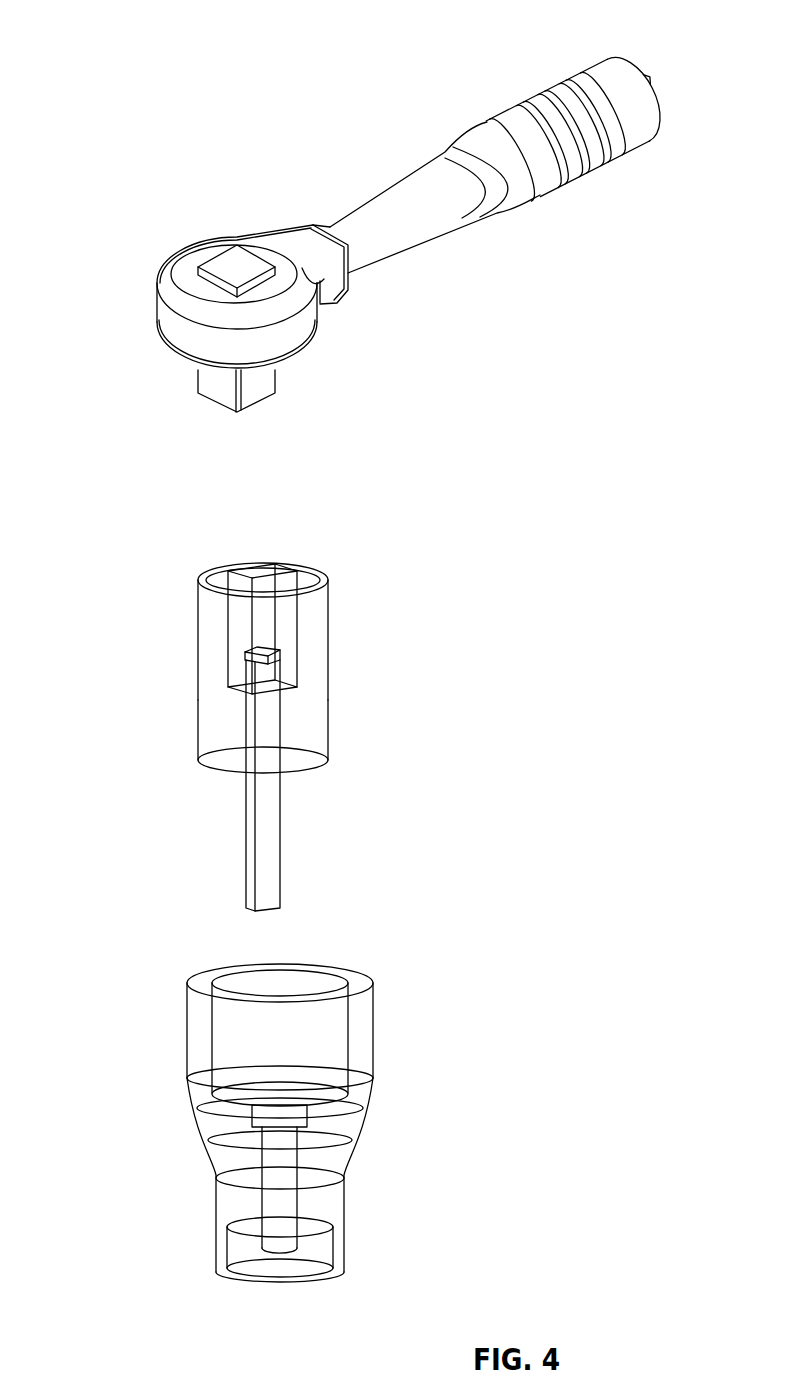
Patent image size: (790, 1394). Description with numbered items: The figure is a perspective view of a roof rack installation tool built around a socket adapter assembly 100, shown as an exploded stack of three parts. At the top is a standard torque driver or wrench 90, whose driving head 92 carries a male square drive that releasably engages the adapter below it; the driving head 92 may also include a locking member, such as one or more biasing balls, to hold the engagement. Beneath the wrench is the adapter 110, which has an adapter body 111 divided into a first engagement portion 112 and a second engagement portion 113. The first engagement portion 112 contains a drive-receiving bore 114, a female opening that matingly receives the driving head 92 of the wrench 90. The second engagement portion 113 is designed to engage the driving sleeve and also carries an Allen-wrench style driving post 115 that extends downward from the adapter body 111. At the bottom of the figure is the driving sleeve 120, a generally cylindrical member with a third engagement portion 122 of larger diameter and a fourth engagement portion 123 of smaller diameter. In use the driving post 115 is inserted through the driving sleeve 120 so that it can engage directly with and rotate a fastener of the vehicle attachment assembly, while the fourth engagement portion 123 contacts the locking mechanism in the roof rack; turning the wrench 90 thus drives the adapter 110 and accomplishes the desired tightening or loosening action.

The torque driver or wrench 90 is at (623, 77).
The driving head 92 is at (185, 250).
The socket adapter assembly 100 is at (128, 140).
The adapter 110 is at (128, 496).
The adapter body 111 is at (198, 623).
The first engagement portion 112 is at (333, 586).
The second engagement portion 113 is at (333, 733).
The drive-receiving bore 114 is at (262, 568).
The driving post 115 is at (247, 853).
The driving sleeve 120 is at (128, 918).
The third engagement portion 122 is at (375, 1015).
The fourth engagement portion 123 is at (338, 1247).